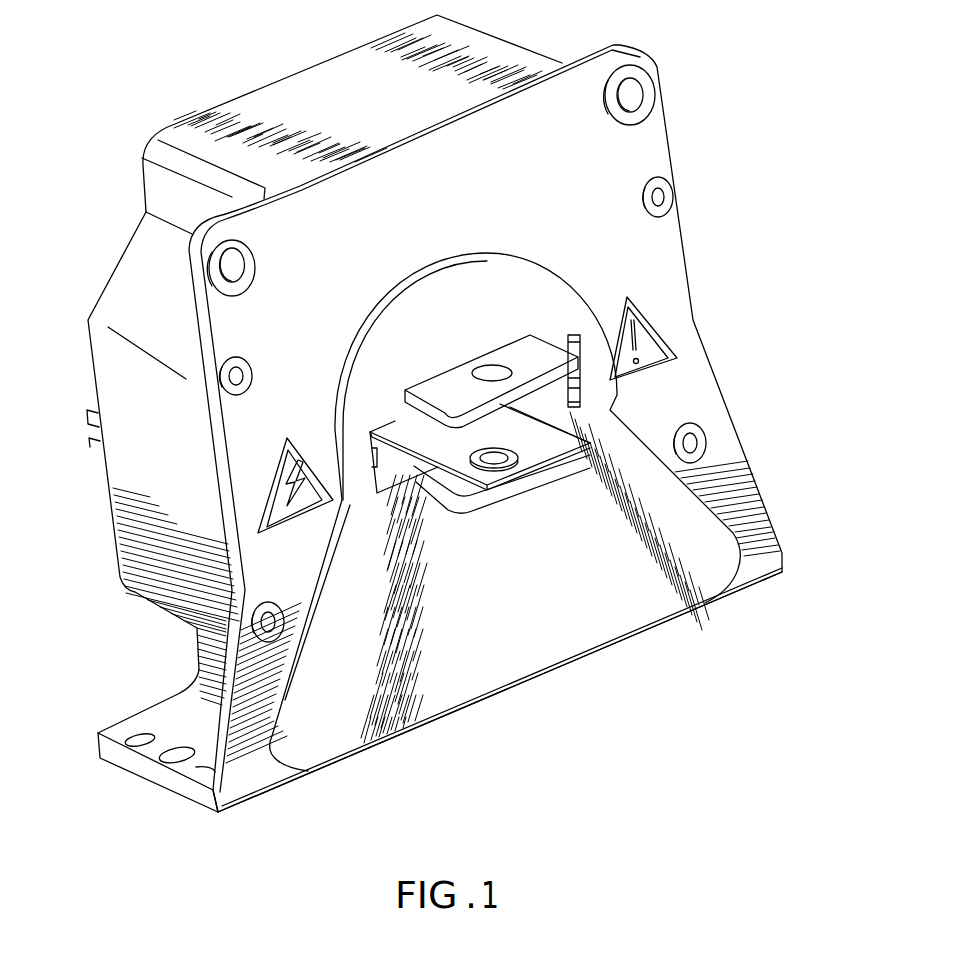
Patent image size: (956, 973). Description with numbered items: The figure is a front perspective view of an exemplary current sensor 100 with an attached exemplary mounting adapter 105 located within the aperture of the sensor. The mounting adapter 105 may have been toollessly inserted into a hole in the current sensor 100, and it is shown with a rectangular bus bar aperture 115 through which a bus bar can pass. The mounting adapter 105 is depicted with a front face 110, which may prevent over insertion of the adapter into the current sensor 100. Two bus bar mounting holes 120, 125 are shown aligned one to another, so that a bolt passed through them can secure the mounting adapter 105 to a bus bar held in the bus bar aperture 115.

The current sensor 100 is at (259, 112).
The mounting adapter 105 is at (599, 354).
The front face 110 is at (473, 688).
The bus bar aperture 115 is at (544, 432).
The bus bar mounting hole 120 is at (484, 370).
The bus bar mounting hole 125 is at (500, 458).